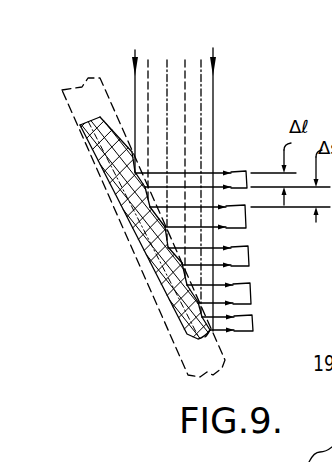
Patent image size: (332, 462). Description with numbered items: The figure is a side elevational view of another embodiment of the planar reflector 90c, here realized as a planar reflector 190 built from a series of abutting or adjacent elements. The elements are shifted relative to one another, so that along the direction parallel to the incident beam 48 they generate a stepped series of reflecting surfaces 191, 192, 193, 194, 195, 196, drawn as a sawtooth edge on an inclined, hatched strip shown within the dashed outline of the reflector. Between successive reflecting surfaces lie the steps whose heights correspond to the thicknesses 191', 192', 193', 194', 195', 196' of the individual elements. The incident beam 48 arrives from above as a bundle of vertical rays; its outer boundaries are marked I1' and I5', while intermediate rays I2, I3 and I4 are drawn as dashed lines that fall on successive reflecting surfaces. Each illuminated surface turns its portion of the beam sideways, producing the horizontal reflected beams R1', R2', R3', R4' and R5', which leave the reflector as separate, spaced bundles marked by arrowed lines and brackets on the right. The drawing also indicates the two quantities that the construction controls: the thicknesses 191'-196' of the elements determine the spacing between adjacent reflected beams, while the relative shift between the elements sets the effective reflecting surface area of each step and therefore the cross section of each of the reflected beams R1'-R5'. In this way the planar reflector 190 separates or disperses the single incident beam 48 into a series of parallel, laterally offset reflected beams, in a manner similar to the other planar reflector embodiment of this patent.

The planar reflector 190 is at (150, 378).
The reflecting surface 191 is at (82, 139).
The element thickness 191' is at (82, 167).
The reflecting surface 192 is at (88, 189).
The element thickness 192' is at (91, 206).
The reflecting surface 193 is at (98, 228).
The element thickness 193' is at (100, 249).
The reflecting surface 194 is at (127, 270).
The element thickness 194' is at (129, 287).
The reflecting surface 195 is at (135, 310).
The element thickness 195' is at (137, 330).
The reflecting surface 196 is at (141, 350).
The element thickness 196' is at (140, 368).
The planar reflector 90c is at (87, 89).
The incident beam 48 is at (190, 93).
The incident ray boundary I1' is at (115, 88).
The incident ray I2 is at (163, 68).
The incident ray I3 is at (180, 72).
The incident ray I4 is at (195, 72).
The incident ray boundary I5' is at (229, 166).
The reflected beam R1' is at (197, 138).
The reflected beam R2' is at (223, 227).
The reflected beam R3' is at (231, 266).
The reflected beam R4' is at (241, 291).
The reflected beam R5' is at (248, 324).